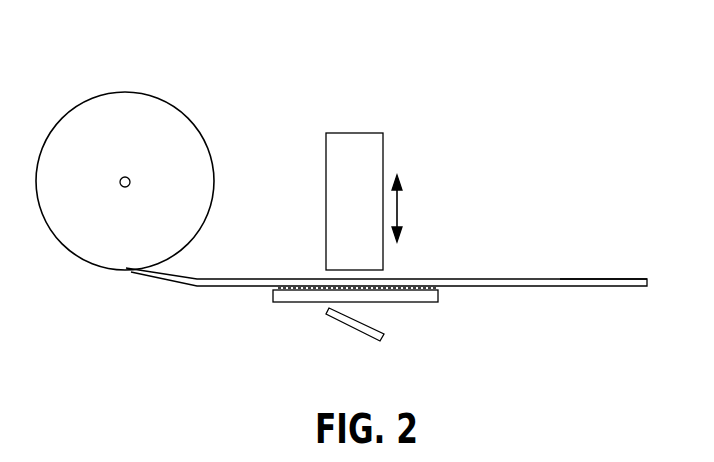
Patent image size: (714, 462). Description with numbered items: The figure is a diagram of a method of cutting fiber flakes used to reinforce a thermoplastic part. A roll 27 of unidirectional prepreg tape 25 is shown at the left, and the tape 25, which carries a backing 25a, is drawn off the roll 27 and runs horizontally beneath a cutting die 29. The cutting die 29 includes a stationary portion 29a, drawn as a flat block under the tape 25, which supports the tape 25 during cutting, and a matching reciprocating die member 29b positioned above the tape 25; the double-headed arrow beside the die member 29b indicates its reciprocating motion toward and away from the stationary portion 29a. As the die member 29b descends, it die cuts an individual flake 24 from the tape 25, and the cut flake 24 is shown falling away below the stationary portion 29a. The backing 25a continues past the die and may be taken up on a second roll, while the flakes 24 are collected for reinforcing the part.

The roll 27 is at (113, 122).
The unidirectional prepreg tape 25 is at (168, 282).
The backing 25a is at (577, 278).
The cutting die 29 is at (420, 183).
The reciprocating die member 29b is at (353, 150).
The stationary portion 29a is at (430, 295).
The flakes 24 is at (334, 340).